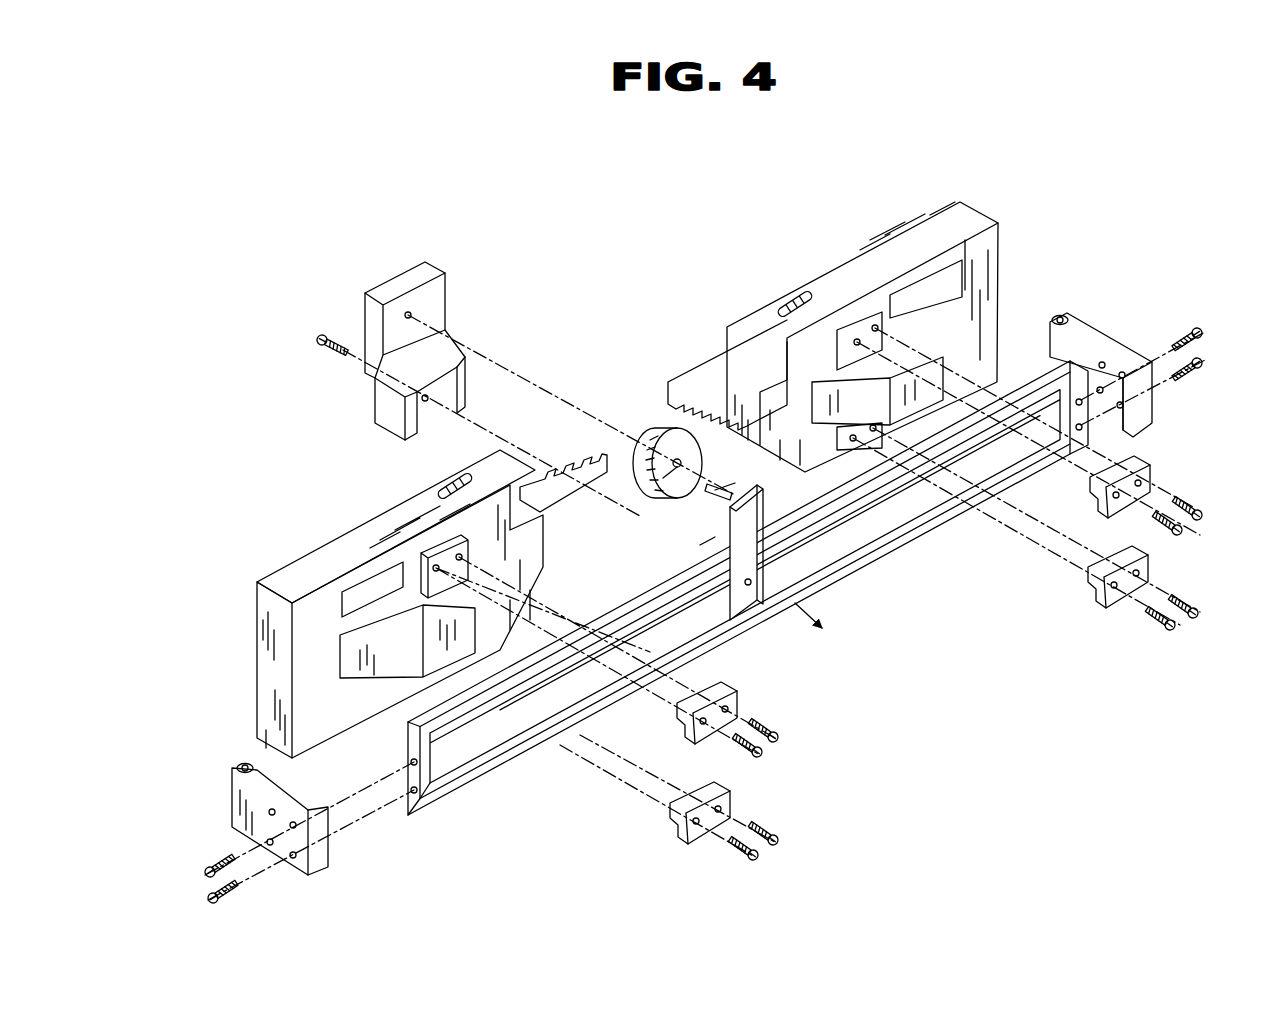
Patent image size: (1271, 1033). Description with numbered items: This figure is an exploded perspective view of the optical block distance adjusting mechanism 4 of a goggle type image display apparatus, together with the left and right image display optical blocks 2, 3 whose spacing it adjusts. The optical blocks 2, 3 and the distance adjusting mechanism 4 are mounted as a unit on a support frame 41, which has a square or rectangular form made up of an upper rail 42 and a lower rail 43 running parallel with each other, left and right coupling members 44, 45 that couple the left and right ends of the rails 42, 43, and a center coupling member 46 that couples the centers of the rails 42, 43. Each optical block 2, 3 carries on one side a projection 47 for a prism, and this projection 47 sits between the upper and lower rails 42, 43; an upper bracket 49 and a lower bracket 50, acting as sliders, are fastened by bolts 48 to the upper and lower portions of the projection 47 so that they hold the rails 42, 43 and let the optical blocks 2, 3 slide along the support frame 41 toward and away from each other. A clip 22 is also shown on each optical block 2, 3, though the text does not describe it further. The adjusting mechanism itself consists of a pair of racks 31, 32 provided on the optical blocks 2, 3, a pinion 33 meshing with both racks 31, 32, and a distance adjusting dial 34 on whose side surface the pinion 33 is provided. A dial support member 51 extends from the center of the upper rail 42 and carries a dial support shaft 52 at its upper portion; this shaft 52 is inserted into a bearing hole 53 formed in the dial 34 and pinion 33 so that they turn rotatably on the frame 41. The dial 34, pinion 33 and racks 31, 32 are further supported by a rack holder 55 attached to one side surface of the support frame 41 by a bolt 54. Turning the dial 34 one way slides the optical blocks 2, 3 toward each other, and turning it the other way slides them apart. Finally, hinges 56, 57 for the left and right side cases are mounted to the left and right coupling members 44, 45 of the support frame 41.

The left image display optical block 2 is at (880, 232).
The right image display optical block 3 is at (282, 565).
The optical block distance adjusting mechanism 4 is at (713, 268).
The clip 22 is at (445, 486).
The rack 31 is at (708, 365).
The rack 32 is at (565, 478).
The pinion 33 is at (642, 436).
The distance adjusting dial 34 is at (665, 432).
The support frame 41 is at (722, 620).
The upper rail 42 is at (474, 705).
The lower rail 43 is at (530, 757).
The left coupling member 44 is at (410, 778).
The right coupling member 45 is at (1072, 402).
The center coupling member 46 is at (750, 592).
The projection 47 is at (405, 625).
The bolts 48 is at (1182, 536).
The upper bracket 49 is at (1135, 460).
The lower bracket 50 is at (1155, 580).
The dial support member 51 is at (703, 548).
The dial support shaft 52 is at (700, 508).
The bearing hole 53 is at (660, 500).
The bolt 54 is at (322, 328).
The rack holder 55 is at (412, 276).
The hinge 56 is at (255, 800).
The hinge 57 is at (1120, 333).